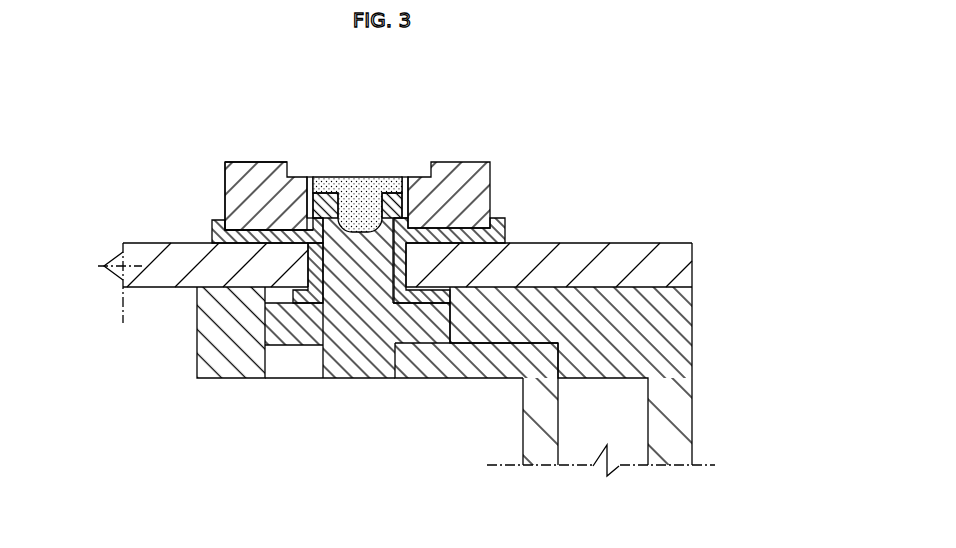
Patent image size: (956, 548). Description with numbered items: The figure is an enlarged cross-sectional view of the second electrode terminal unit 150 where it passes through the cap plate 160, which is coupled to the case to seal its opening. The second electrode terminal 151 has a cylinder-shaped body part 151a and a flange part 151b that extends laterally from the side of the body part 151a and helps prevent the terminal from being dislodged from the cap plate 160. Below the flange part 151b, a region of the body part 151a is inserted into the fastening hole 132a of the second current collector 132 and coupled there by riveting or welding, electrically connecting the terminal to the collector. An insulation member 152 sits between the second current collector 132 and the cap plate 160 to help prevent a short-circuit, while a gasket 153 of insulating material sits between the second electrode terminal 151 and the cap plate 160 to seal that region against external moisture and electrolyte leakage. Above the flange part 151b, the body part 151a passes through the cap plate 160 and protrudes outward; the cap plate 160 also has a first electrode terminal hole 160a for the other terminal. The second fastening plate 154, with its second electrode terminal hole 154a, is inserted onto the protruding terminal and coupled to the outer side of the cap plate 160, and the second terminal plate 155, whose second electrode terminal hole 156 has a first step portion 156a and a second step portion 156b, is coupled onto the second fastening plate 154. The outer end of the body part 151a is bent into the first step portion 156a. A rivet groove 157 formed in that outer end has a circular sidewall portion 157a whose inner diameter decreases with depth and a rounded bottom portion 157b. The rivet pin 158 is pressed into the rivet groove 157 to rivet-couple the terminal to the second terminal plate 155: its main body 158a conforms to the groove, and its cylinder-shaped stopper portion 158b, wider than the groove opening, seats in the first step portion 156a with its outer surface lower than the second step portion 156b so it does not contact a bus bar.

The second electrode terminal unit 150 is at (316, 227).
The second electrode terminal 151 is at (354, 350).
The body part 151a is at (362, 262).
The flange part 151b is at (287, 327).
The insulation member 152 is at (635, 333).
The gasket 153 is at (265, 305).
The second fastening plate 154 is at (457, 228).
The second electrode terminal hole 154a is at (292, 231).
The second terminal plate 155 is at (481, 165).
The second electrode terminal hole 156 is at (227, 159).
The first step portion 156a is at (227, 167).
The second step portion 156b is at (258, 162).
The rivet groove 157 is at (192, 197).
The sidewall portion 157a is at (292, 223).
The bottom portion 157b is at (288, 237).
The rivet pin 158 is at (384, 149).
The main body 158a is at (363, 207).
The stopper portion 158b is at (355, 110).
The cap plate 160 is at (683, 263).
The first electrode terminal hole 160a is at (478, 268).
The second current collector 132 is at (543, 443).
The fastening hole 132a is at (397, 357).